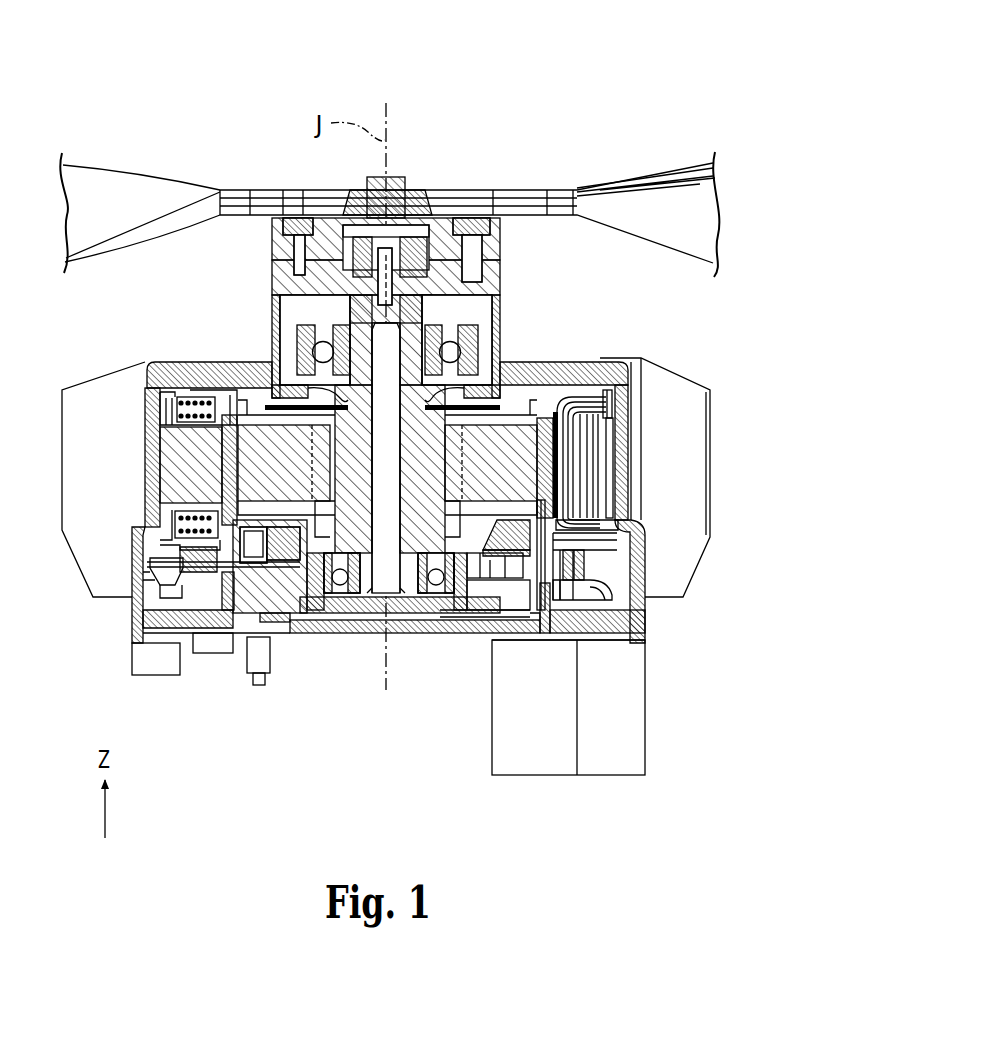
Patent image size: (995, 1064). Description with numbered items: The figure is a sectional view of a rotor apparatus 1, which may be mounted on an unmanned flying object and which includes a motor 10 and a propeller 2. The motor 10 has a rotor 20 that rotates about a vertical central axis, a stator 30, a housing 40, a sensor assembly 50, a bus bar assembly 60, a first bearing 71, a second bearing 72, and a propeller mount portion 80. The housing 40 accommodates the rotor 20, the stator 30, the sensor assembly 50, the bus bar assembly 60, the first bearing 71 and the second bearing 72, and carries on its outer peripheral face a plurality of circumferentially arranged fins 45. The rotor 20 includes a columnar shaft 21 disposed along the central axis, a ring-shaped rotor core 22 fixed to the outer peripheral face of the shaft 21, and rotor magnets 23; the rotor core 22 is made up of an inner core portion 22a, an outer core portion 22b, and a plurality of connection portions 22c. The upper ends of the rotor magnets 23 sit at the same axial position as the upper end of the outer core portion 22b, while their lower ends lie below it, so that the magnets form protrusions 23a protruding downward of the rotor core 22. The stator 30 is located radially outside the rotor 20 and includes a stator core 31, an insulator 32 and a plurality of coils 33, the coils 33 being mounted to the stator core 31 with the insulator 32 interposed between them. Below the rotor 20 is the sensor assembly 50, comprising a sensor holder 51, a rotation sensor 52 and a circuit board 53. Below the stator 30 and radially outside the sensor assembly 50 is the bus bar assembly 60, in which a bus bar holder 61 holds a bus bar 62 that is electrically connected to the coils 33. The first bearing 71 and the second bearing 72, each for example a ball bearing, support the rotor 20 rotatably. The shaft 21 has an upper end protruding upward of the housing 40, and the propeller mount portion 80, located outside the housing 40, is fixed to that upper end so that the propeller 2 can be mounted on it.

The rotor apparatus 1 is at (637, 77).
The propeller 2 is at (551, 187).
The motor 10 is at (589, 322).
The rotor 20 is at (447, 389).
The shaft 21 is at (413, 537).
The rotor core 22 is at (155, 731).
The inner core portion 22a is at (293, 515).
The outer core portion 22b is at (247, 542).
The connection portions 22c is at (277, 535).
The rotor magnet 23 is at (562, 442).
The protrusions 23a is at (555, 520).
The stator 30 is at (612, 541).
The stator core 31 is at (165, 458).
The insulator 32 is at (167, 405).
The coils 33 is at (190, 408).
The housing 40 is at (205, 357).
The fins 45 is at (105, 570).
The sensor assembly 50 is at (491, 572).
The sensor holder 51 is at (330, 547).
The rotation sensor 52 is at (612, 521).
The circuit board 53 is at (510, 566).
The bus bar assembly 60 is at (612, 568).
The bus bar holder 61 is at (529, 634).
The bus bar 62 is at (584, 634).
The first bearing 71 is at (339, 586).
The second bearing 72 is at (312, 350).
The propeller mount portion 80 is at (505, 262).